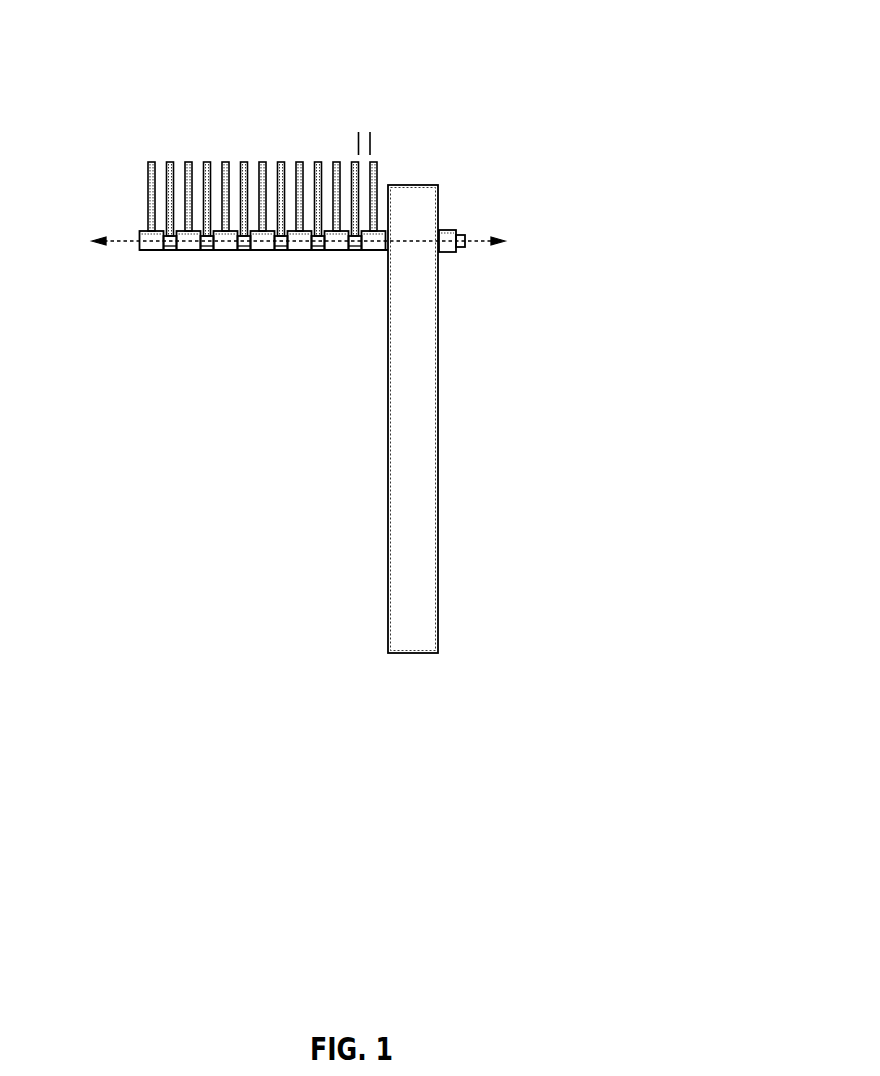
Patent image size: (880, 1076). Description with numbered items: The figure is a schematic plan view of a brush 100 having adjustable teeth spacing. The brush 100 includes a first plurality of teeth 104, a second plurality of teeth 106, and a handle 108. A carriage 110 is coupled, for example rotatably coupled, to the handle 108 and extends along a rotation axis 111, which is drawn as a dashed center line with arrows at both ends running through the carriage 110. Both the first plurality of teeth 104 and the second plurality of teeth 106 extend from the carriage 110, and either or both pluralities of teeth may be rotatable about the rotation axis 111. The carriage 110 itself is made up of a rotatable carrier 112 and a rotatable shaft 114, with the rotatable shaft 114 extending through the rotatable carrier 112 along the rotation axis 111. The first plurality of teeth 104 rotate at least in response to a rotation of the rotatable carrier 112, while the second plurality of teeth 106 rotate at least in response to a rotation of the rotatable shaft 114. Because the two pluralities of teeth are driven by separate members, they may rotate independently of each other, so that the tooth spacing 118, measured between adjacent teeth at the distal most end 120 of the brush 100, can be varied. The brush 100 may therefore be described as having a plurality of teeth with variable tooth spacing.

The brush 100 is at (506, 121).
The first plurality of teeth 104 is at (150, 161).
The second plurality of teeth 106 is at (172, 161).
The handle 108 is at (438, 408).
The carriage 110 is at (116, 261).
The rotation axis 111 is at (478, 233).
The rotatable carrier 112 is at (150, 250).
The rotatable shaft 114 is at (245, 250).
The tooth spacing 118 is at (337, 139).
The distal most end 120 is at (334, 72).